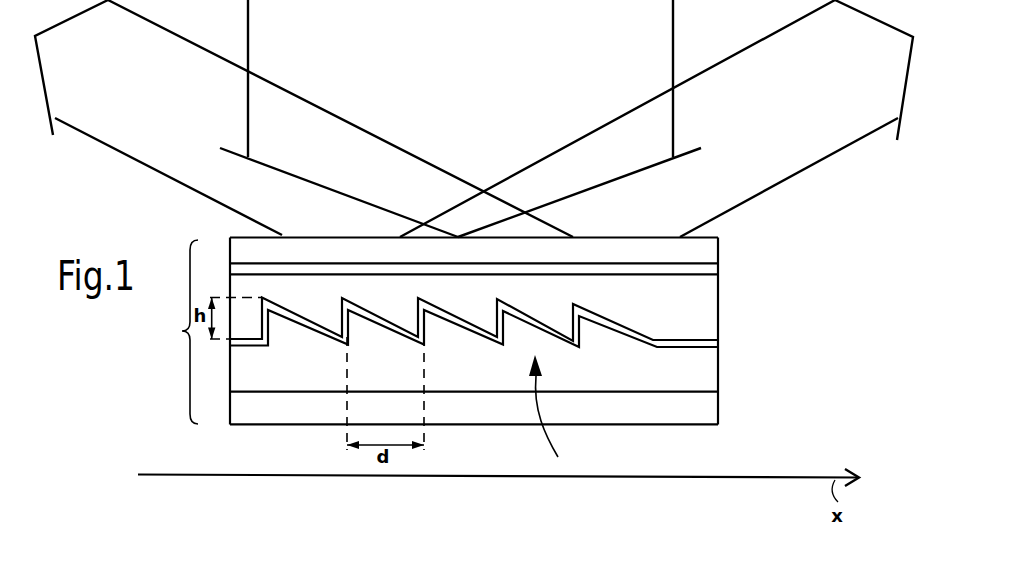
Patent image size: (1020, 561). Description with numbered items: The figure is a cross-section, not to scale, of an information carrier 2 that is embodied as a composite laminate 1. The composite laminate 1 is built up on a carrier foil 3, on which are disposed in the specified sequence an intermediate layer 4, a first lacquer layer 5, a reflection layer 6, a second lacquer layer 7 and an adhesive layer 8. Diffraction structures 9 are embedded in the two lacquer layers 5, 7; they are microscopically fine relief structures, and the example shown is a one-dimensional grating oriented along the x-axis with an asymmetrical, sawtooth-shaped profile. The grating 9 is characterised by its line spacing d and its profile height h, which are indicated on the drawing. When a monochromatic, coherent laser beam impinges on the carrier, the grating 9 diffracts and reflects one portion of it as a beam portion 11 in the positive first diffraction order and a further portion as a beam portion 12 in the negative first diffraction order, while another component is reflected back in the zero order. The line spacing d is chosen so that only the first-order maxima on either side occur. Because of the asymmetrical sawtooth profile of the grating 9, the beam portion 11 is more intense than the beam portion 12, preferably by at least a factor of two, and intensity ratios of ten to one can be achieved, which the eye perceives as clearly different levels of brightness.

The composite laminate 1 is at (178, 332).
The information carrier 2 is at (251, 456).
The carrier foil 3 is at (705, 250).
The intermediate layer 4 is at (712, 268).
The first lacquer layer 5 is at (703, 312).
The reflection layer 6 is at (717, 345).
The second lacquer layer 7 is at (707, 373).
The adhesive layer 8 is at (708, 405).
The diffraction structures 9 is at (553, 411).
The beam portion 11 is at (840, 133).
The beam portion 12 is at (137, 147).